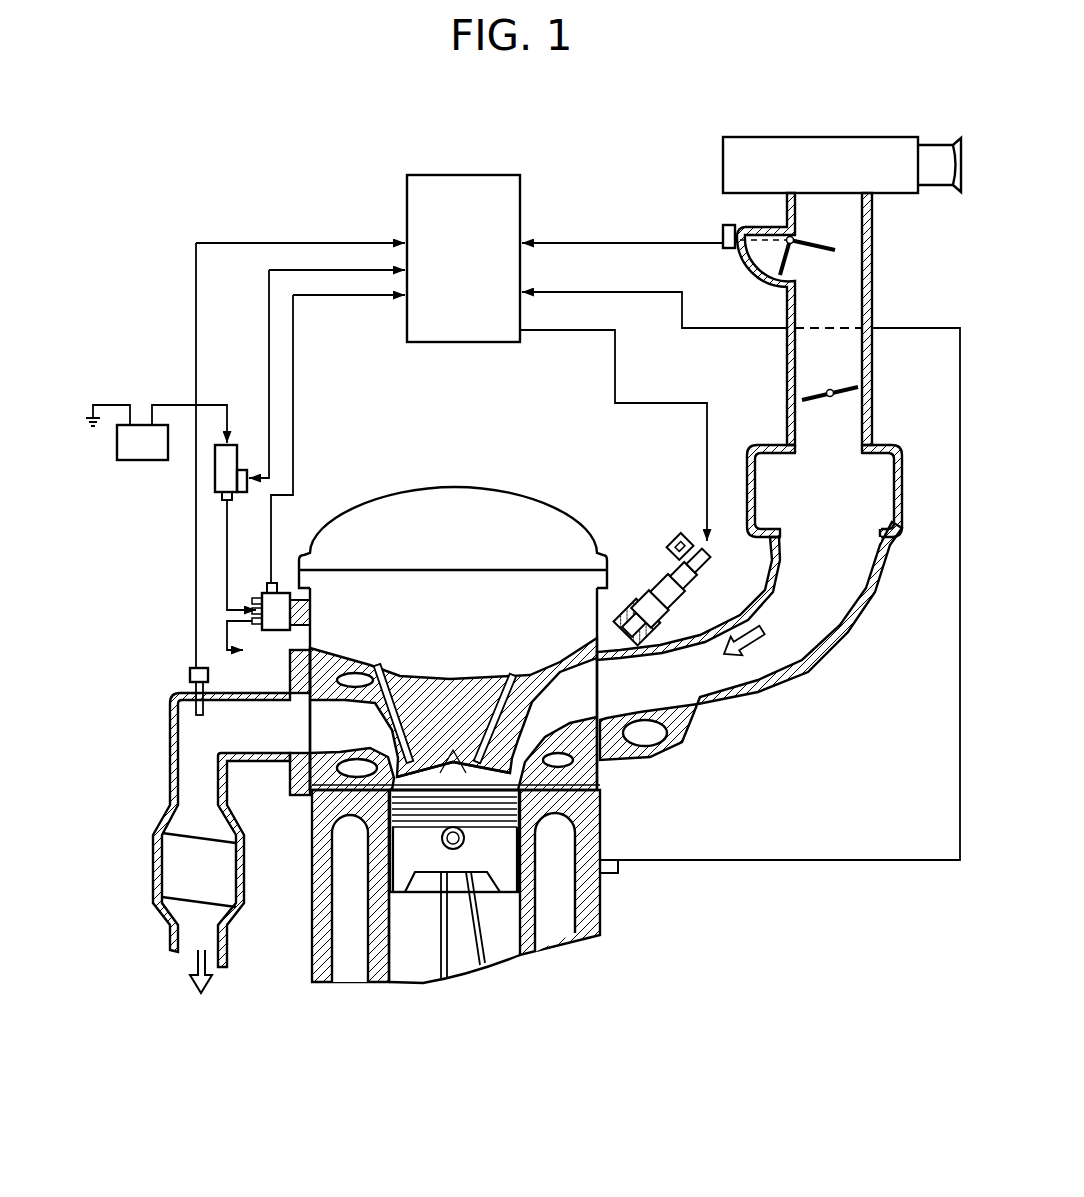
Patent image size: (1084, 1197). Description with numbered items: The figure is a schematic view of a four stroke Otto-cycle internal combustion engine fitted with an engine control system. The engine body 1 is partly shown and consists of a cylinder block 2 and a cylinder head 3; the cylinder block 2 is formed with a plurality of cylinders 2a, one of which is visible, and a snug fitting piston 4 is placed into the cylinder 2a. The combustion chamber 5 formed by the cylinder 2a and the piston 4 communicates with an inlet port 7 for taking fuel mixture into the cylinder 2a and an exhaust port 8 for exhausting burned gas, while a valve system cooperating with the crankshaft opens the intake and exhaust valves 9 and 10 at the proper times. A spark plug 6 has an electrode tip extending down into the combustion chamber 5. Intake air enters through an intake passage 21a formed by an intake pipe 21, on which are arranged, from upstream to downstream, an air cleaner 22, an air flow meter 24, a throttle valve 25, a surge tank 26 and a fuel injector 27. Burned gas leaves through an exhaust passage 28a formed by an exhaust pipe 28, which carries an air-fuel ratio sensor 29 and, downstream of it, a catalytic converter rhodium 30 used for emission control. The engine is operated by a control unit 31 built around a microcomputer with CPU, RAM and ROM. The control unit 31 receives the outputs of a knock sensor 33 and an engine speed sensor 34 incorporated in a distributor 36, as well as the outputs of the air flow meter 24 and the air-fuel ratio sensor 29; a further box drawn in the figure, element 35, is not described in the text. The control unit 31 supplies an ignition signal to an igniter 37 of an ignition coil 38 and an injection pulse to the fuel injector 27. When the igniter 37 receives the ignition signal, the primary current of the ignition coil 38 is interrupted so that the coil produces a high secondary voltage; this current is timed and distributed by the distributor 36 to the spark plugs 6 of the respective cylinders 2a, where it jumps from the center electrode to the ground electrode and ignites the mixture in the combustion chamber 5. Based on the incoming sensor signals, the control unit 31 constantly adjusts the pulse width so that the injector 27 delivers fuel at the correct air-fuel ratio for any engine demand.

The engine body 1 is at (630, 926).
The cylinder block 2 is at (492, 886).
The cylinder 2a is at (385, 945).
The cylinder head 3 is at (548, 585).
The piston 4 is at (436, 935).
The combustion chamber 5 is at (440, 778).
The spark plug 6 is at (478, 800).
The inlet port 7 is at (515, 760).
The exhaust port 8 is at (400, 762).
The intake valve 9 is at (490, 762).
The exhaust valve 10 is at (418, 775).
The intake pipe 21 is at (832, 658).
The intake passage 21a is at (813, 610).
The air cleaner 22 is at (905, 183).
The air flow meter 24 is at (729, 250).
The throttle valve 25 is at (822, 392).
The surge tank 26 is at (893, 540).
The fuel injector 27 is at (652, 582).
The exhaust pipe 28 is at (168, 760).
The exhaust passage 28a is at (195, 785).
The air-fuel ratio sensor 29 is at (190, 674).
The catalytic converter rhodium 30 is at (162, 868).
The control unit 31 is at (478, 271).
The knock sensor 33 is at (620, 858).
The engine speed sensor 34 is at (273, 583).
The power source 35 is at (138, 450).
The distributor 36 is at (318, 617).
The igniter 37 is at (244, 495).
The ignition coil 38 is at (236, 443).